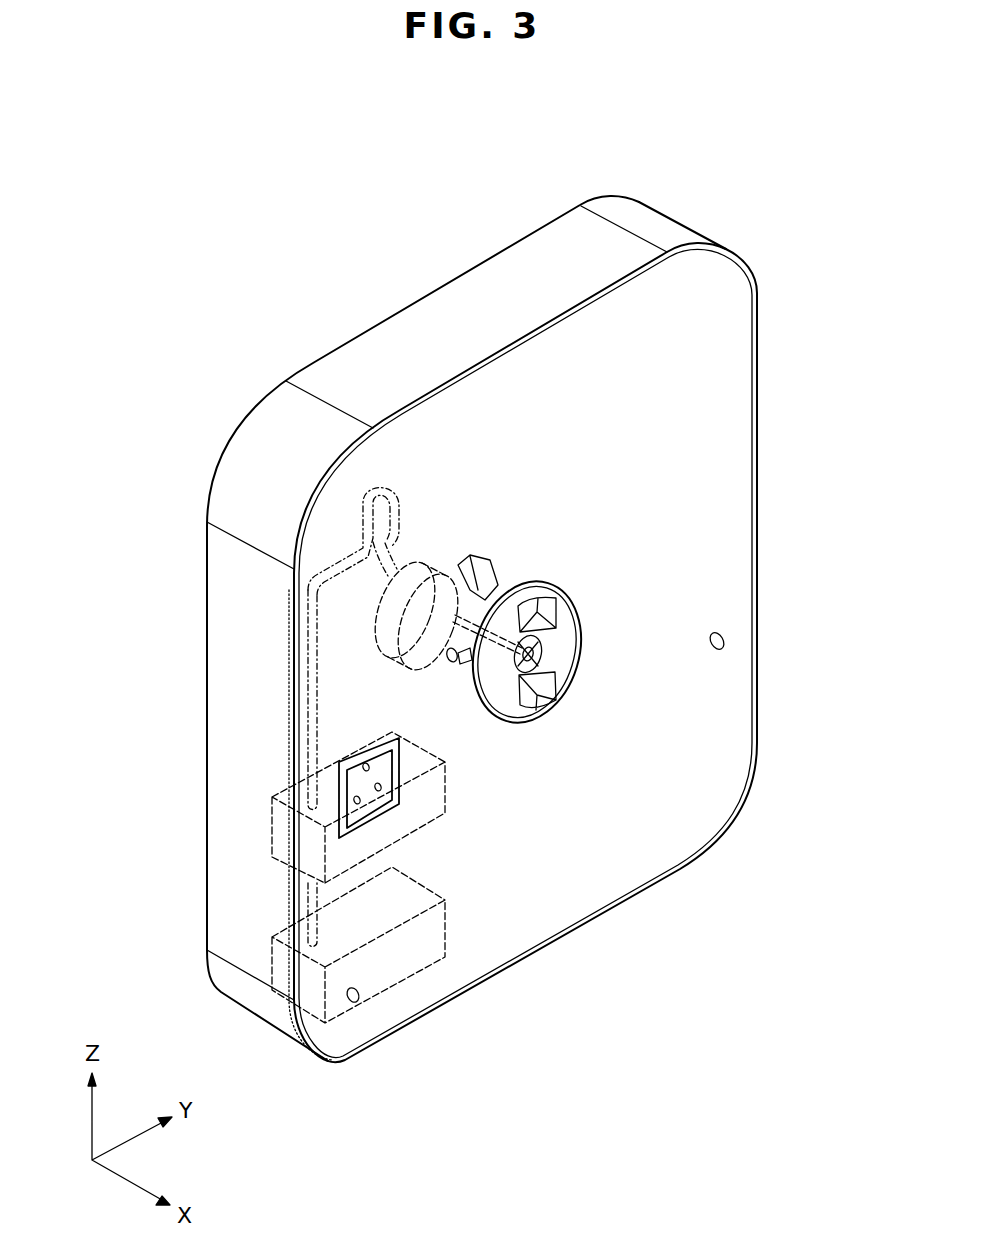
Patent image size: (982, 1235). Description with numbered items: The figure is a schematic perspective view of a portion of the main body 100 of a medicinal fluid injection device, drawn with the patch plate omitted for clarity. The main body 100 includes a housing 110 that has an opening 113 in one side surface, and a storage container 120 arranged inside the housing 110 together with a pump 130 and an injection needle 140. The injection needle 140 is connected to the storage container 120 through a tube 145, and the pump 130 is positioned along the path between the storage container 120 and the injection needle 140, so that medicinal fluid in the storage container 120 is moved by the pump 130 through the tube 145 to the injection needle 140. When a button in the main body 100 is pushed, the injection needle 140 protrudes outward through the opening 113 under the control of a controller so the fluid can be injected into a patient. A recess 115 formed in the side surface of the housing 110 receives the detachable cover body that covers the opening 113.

The main body 100 is at (288, 301).
The housing 110 is at (657, 223).
The opening 113 is at (531, 647).
The recess 115 is at (537, 610).
The storage container 120 is at (272, 957).
The pump 130 is at (272, 827).
The injection needle 140 is at (490, 718).
The tube 145 is at (313, 699).